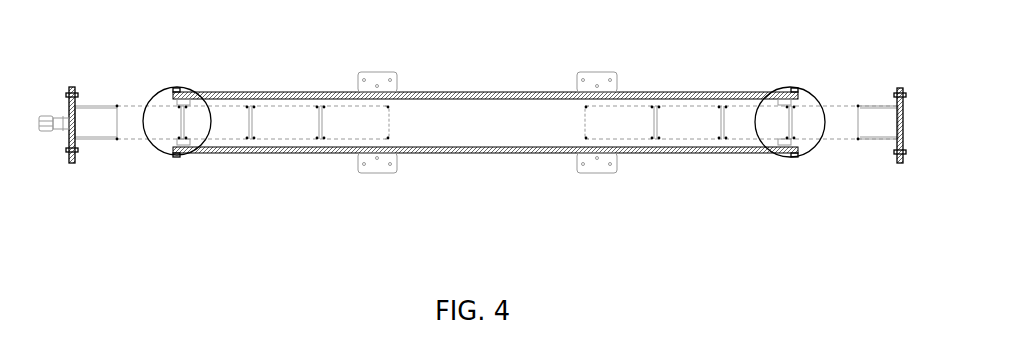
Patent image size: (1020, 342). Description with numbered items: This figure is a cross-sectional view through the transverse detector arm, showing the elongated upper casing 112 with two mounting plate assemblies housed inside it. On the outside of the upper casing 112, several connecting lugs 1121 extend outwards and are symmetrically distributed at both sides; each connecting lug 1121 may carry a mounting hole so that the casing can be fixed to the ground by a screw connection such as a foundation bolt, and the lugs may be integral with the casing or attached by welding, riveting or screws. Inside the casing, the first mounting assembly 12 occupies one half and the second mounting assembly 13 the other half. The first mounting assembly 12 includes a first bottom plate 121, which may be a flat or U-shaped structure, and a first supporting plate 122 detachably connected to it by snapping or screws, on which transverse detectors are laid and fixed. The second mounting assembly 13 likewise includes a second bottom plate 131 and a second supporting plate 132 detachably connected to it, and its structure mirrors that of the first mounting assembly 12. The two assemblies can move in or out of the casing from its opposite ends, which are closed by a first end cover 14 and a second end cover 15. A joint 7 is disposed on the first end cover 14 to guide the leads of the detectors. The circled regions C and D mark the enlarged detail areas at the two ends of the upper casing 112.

The joint 7 is at (44, 131).
The first mounting assembly 12 is at (207, 202).
The first bottom plate 121 is at (95, 140).
The first supporting plate 122 is at (231, 135).
The second mounting assembly 13 is at (836, 110).
The second bottom plate 131 is at (862, 140).
The second supporting plate 132 is at (735, 135).
The first end cover 14 is at (73, 87).
The second end cover 15 is at (900, 88).
The upper casing 112 is at (226, 97).
The connecting lug 1121 is at (373, 72).
The detail region C is at (179, 90).
The detail region D is at (784, 88).